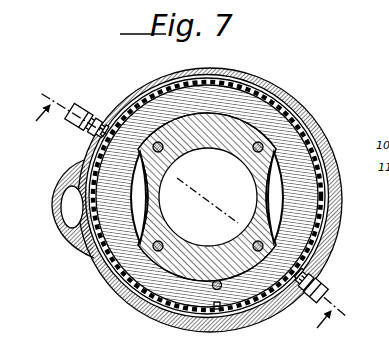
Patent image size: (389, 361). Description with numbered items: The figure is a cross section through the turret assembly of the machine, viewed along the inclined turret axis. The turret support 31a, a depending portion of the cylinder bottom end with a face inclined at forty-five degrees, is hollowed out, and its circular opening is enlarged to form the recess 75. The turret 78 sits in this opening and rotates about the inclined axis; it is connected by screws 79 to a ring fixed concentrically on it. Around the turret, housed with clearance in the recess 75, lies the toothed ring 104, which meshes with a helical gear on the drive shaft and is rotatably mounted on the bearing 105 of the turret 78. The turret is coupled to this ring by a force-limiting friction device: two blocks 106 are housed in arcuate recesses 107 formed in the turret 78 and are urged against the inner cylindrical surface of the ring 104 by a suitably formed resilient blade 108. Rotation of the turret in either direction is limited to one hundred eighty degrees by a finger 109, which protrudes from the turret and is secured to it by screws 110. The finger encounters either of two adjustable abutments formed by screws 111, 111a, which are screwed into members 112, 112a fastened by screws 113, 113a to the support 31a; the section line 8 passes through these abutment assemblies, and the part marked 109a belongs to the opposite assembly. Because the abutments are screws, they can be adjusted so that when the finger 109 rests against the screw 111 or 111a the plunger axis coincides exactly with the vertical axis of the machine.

The section line 8- 8 is at (191, 206).
The turret support 31a is at (161, 311).
The recess 75 is at (285, 100).
The turret 78 is at (194, 247).
The screws 79 is at (163, 247).
The toothed ring 104 is at (217, 309).
The bearing 105 is at (217, 281).
The blocks 106 is at (287, 205).
The arcuate recesses 107 is at (257, 176).
The resilient blade 108 is at (200, 182).
The finger 109 is at (76, 106).
The plug head 109a is at (316, 290).
The screws 110 is at (126, 197).
The screw 111 is at (91, 126).
The screw 111a is at (322, 277).
The member 112 is at (71, 159).
The member 112a is at (325, 283).
The screws 113 is at (92, 131).
The screws 113a is at (304, 298).